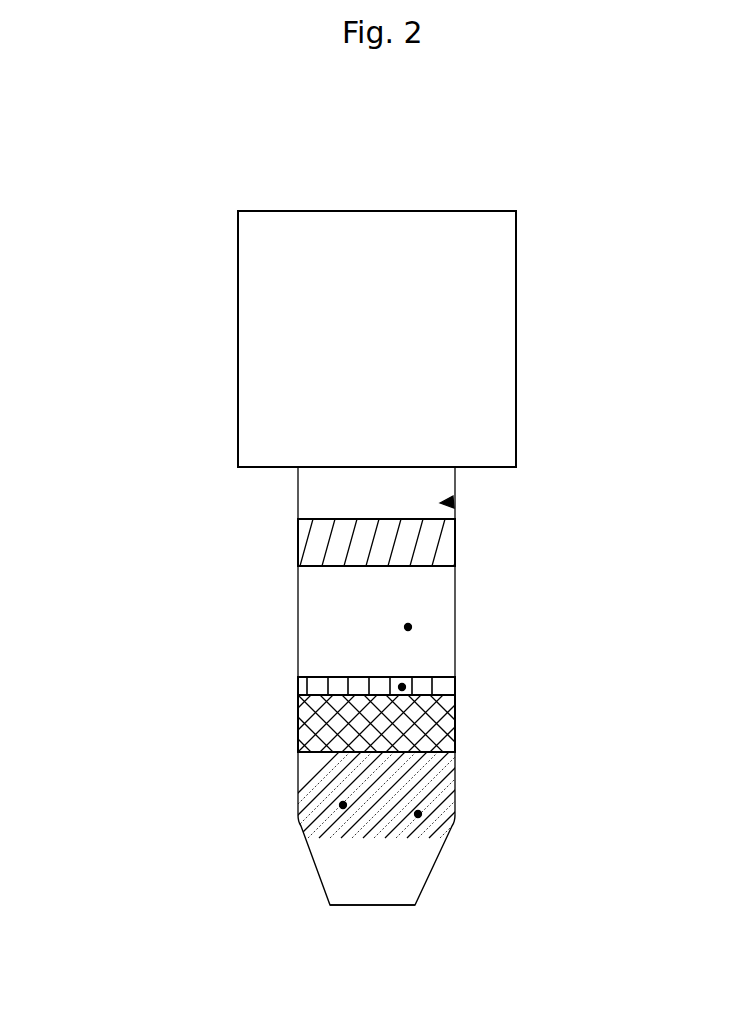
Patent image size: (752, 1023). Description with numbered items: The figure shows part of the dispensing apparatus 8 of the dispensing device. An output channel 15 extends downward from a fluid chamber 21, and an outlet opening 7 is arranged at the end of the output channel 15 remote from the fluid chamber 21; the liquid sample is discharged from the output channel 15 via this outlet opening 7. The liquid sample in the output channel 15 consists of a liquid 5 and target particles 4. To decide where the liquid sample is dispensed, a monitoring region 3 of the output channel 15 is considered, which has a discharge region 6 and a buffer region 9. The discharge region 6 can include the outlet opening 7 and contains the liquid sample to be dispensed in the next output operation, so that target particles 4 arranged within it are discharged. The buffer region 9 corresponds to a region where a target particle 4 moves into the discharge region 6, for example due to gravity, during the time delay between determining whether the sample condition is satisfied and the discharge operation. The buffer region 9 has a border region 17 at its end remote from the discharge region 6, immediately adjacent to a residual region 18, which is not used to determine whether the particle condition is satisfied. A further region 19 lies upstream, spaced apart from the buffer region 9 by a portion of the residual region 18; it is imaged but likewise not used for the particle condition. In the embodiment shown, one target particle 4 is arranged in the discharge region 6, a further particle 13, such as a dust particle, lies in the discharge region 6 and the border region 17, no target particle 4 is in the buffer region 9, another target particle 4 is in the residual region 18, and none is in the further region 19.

The dispensing apparatus 8 is at (139, 150).
The fluid chamber 21 is at (395, 266).
The residual region 18 is at (317, 486).
The liquid 5 is at (449, 502).
The further region 19 is at (430, 548).
The target particles 4 is at (411, 626).
The further particle 13 is at (400, 685).
The border region 17 is at (318, 688).
The buffer region 9 is at (523, 676).
The discharge region 6 is at (562, 753).
The monitoring region 3 is at (627, 676).
The output channel 15 is at (176, 777).
The outlet opening 7 is at (368, 906).